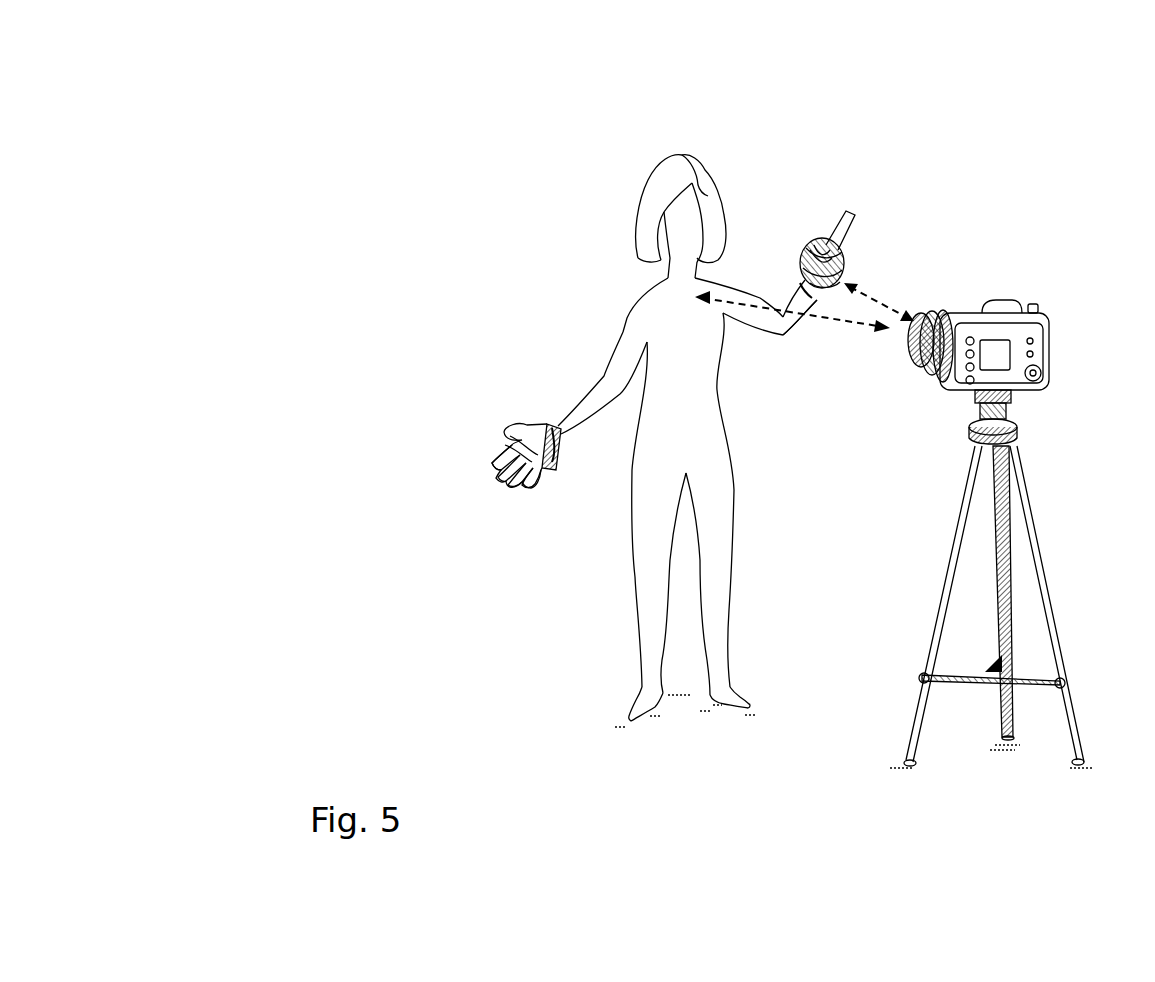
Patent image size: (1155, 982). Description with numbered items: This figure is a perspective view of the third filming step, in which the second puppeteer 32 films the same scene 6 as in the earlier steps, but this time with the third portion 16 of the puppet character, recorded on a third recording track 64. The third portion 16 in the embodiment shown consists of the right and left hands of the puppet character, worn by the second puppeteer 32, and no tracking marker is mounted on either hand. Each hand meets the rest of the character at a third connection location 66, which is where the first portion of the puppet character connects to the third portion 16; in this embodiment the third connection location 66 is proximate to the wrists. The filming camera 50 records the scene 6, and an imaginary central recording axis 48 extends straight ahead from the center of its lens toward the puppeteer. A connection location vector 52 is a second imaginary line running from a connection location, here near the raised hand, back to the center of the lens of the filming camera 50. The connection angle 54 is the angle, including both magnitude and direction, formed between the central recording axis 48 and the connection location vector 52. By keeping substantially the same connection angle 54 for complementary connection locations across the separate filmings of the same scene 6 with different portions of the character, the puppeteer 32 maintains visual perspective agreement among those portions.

The scene 6 is at (1008, 107).
The second puppeteer 32 is at (640, 212).
The third portion of the puppet character 16 is at (847, 213).
The third connection location 66 is at (801, 286).
The central recording axis 48 is at (823, 320).
The filming camera 50 is at (1050, 336).
The connection location vector 52 is at (872, 295).
The connection angle 54 is at (886, 328).
The third recording track 64 is at (1038, 395).